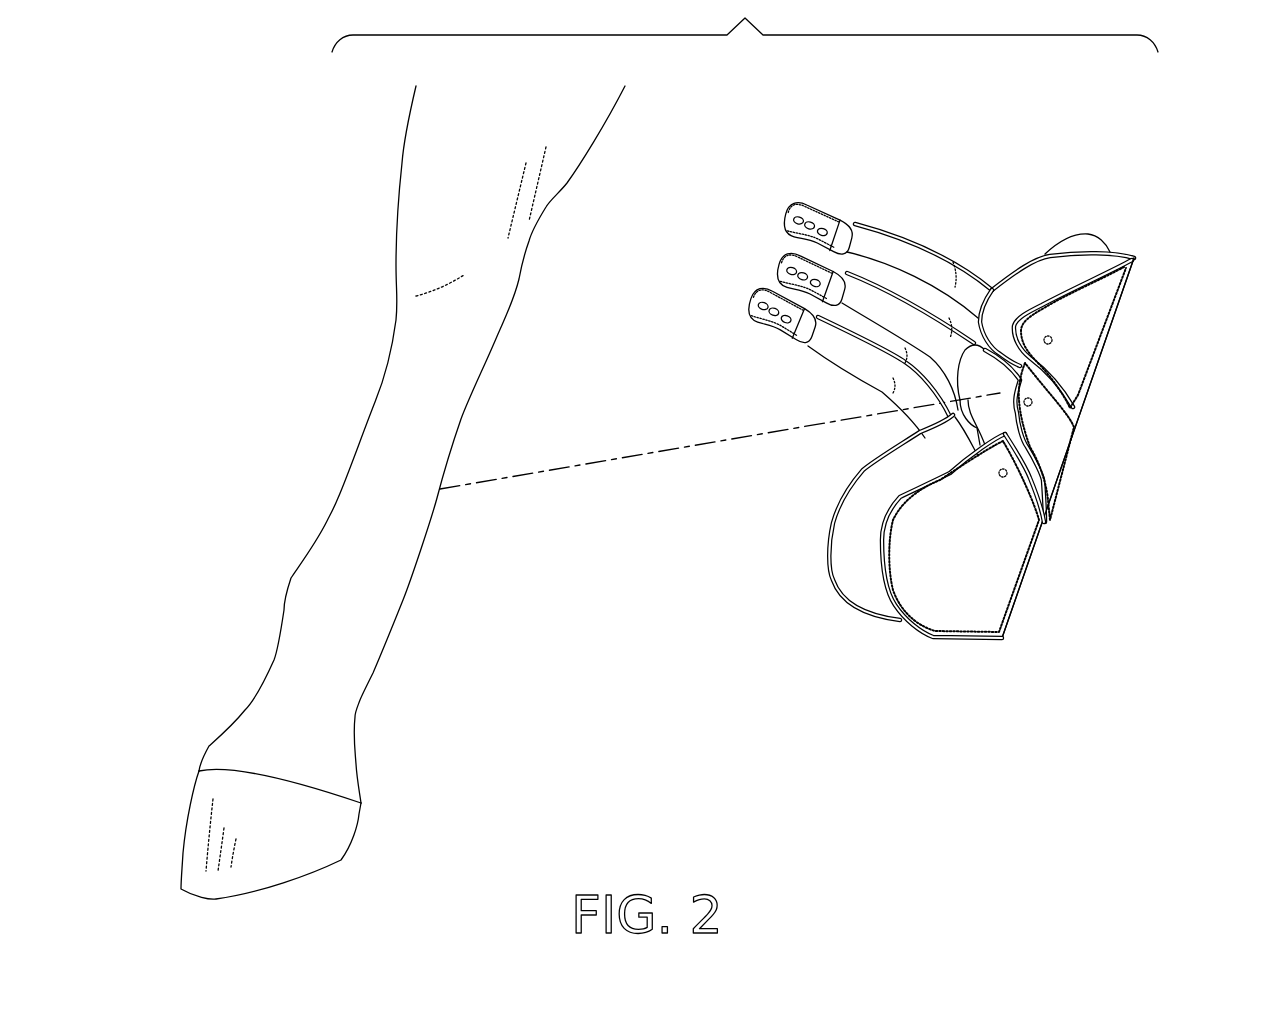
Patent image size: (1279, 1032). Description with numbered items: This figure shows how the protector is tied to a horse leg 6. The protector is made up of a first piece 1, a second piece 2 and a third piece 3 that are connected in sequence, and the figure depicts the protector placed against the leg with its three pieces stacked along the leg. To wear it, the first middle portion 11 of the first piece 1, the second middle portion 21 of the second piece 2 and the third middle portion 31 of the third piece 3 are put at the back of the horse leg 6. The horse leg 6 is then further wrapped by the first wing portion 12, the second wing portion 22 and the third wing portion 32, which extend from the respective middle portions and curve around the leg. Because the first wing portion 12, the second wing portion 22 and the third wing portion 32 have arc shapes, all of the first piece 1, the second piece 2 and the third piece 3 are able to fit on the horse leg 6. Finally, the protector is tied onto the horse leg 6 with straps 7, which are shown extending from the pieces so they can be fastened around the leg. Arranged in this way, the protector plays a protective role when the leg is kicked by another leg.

The first piece 1 is at (1060, 573).
The first middle portion 11 is at (1007, 618).
The first wing portion 12 is at (860, 573).
The second piece 2 is at (1090, 450).
The second middle portion 21 is at (1058, 468).
The second wing portion 22 is at (972, 383).
The third piece 3 is at (1145, 297).
The third middle portion 31 is at (1102, 345).
The third wing portion 32 is at (1027, 270).
The horse leg 6 is at (396, 414).
The straps 7 is at (894, 248).